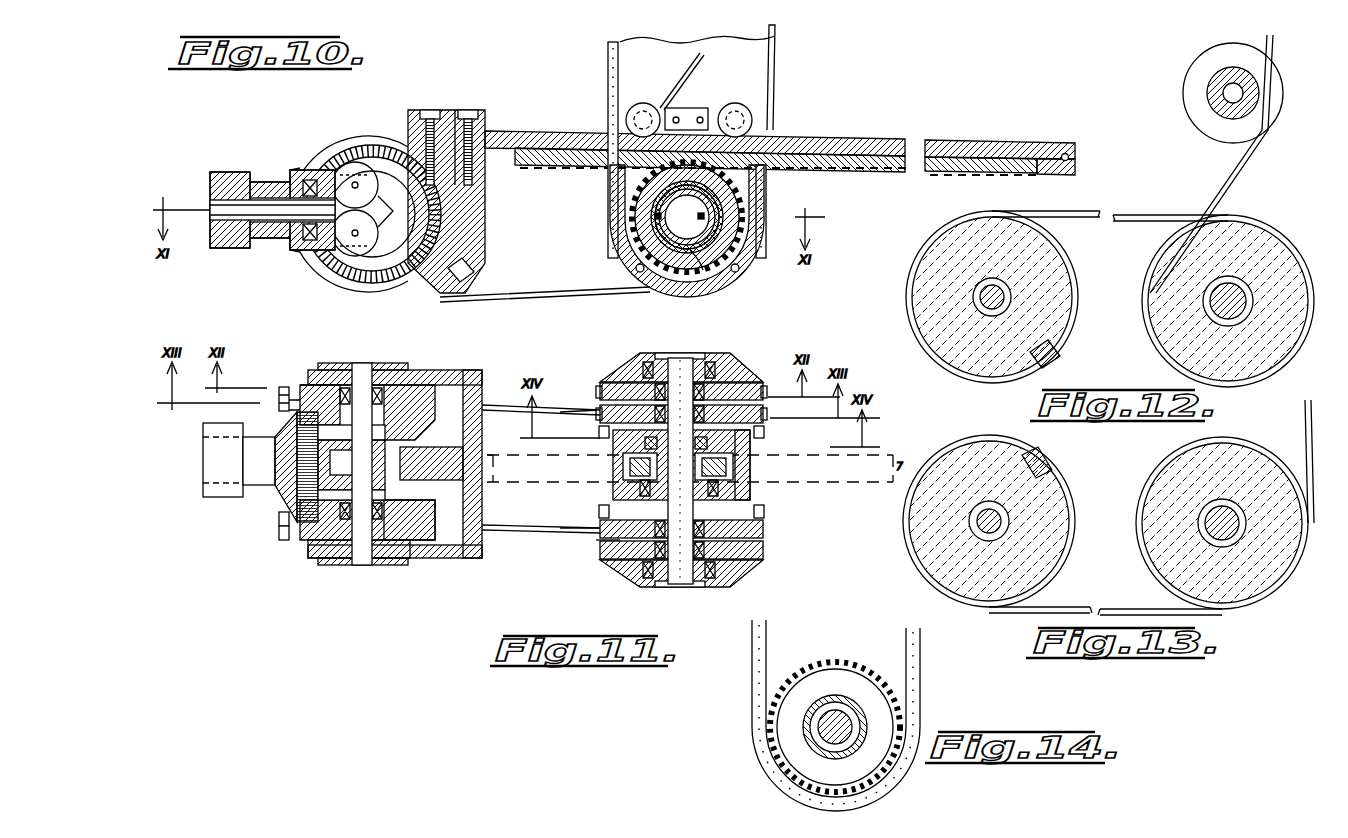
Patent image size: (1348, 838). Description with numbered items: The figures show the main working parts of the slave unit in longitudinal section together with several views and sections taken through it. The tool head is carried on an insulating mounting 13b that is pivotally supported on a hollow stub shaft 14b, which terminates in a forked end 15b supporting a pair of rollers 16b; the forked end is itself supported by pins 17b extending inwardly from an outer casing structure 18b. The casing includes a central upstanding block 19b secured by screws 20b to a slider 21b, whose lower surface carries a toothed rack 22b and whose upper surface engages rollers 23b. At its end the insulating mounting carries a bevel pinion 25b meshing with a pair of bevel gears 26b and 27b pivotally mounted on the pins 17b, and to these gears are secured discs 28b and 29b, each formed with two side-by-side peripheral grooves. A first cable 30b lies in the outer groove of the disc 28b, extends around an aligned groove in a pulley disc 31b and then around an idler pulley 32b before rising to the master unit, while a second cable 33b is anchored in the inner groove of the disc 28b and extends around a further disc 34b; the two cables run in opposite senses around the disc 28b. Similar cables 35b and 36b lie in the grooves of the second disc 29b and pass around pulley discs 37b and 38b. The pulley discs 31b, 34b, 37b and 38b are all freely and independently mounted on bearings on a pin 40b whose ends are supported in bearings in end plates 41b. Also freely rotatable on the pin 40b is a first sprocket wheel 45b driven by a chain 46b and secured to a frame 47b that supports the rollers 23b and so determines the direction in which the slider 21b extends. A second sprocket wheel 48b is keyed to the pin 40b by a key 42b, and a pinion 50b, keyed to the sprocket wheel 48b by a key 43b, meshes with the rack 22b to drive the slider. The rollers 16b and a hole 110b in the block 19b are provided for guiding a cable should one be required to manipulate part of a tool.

In FIG. 10, the insulating mounting 13b is at (218, 172).
In FIG. 11, the insulating mounting 13b is at (208, 430).
In FIG. 10, the stub shaft 14b is at (245, 200).
In FIG. 10, the forked end 15b is at (385, 200).
In FIG. 11, the forked end 15b is at (385, 480).
In FIG. 10, the rollers 16b is at (370, 258).
In FIG. 11, the rollers 16b is at (300, 467).
In FIG. 12, the pins 17b is at (985, 295).
In FIG. 13, the pins 17b is at (1000, 525).
In FIG. 11, the pins 17b is at (360, 565).
In FIG. 11, the outer casing structure 18b is at (385, 558).
In FIG. 10, the central upstanding block 19b is at (478, 230).
In FIG. 11, the central upstanding block 19b is at (440, 470).
In FIG. 10, the screws 20b is at (467, 110).
In FIG. 10, the slider 21b is at (525, 131).
In FIG. 11, the slider 21b is at (590, 482).
In FIG. 10, the toothed rack 22b is at (552, 165).
In FIG. 10, the rollers 23b is at (745, 108).
In FIG. 10, the bevel pinion 25b is at (282, 140).
In FIG. 11, the bevel pinion 25b is at (285, 475).
In FIG. 10, the bevel gear 26b is at (305, 180).
In FIG. 11, the bevel gear 26b is at (300, 388).
In FIG. 11, the bevel gear 27b is at (405, 540).
In FIG. 10, the disc 28b is at (330, 150).
In FIG. 12, the disc 28b is at (920, 315).
In FIG. 13, the disc 28b is at (940, 570).
In FIG. 11, the disc 28b is at (415, 390).
In FIG. 11, the disc 29b is at (312, 545).
In FIG. 10, the first cable 30b is at (672, 95).
In FIG. 12, the first cable 30b is at (945, 365).
In FIG. 11, the first cable 30b is at (770, 385).
In FIG. 12, the pulley disc 31b is at (1215, 235).
In FIG. 11, the pulley disc 31b is at (740, 385).
In FIG. 12, the idler pulley 32b is at (1222, 105).
In FIG. 10, the second cable 33b is at (775, 40).
In FIG. 12, the second cable 33b is at (1110, 299).
In FIG. 13, the second cable 33b is at (1308, 420).
In FIG. 11, the second cable 33b is at (767, 415).
In FIG. 13, the further disc 34b is at (1180, 475).
In FIG. 11, the further disc 34b is at (615, 413).
In FIG. 11, the cable 35b is at (765, 552).
In FIG. 11, the cable 36b is at (765, 535).
In FIG. 11, the pulley disc 37b is at (600, 532).
In FIG. 11, the pulley disc 38b is at (620, 560).
In FIG. 10, the pin 40b is at (693, 210).
In FIG. 12, the pin 40b is at (1225, 300).
In FIG. 13, the pin 40b is at (1215, 525).
In FIG. 14, the pin 40b is at (830, 720).
In FIG. 11, the pin 40b is at (675, 400).
In FIG. 11, the end plates 41b is at (715, 582).
In FIG. 10, the key 42b is at (748, 275).
In FIG. 11, the key 42b is at (740, 490).
In FIG. 10, the key 43b is at (672, 240).
In FIG. 11, the key 43b is at (658, 468).
In FIG. 14, the first sprocket wheel 45b is at (800, 748).
In FIG. 11, the first sprocket wheel 45b is at (760, 438).
In FIG. 10, the chain 46b is at (767, 208).
In FIG. 14, the chain 46b is at (921, 657).
In FIG. 10, the frame 47b is at (722, 262).
In FIG. 14, the frame 47b is at (805, 725).
In FIG. 11, the frame 47b is at (625, 458).
In FIG. 10, the second sprocket wheel 48b is at (685, 270).
In FIG. 11, the second sprocket wheel 48b is at (762, 512).
In FIG. 10, the pinion 50b is at (660, 215).
In FIG. 11, the pinion 50b is at (725, 468).
In FIG. 10, the hole 110b is at (470, 280).